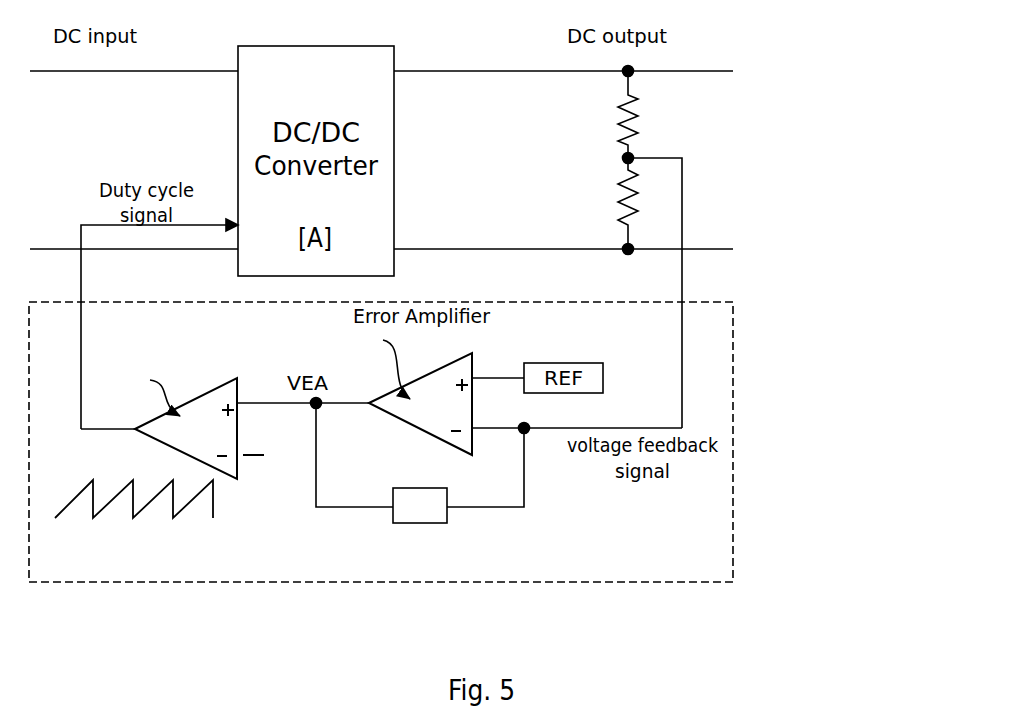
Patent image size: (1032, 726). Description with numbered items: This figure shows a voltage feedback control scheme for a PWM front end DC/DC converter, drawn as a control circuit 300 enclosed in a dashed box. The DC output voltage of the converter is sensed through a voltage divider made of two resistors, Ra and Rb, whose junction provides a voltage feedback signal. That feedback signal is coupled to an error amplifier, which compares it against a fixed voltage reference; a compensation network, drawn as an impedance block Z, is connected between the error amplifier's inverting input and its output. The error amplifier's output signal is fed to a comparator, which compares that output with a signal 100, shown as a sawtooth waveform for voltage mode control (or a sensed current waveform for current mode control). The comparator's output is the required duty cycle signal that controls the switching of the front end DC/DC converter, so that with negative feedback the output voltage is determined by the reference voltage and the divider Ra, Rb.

The signal 100 is at (263, 468).
The control circuit 300 is at (712, 338).
The resistor Ra is at (600, 114).
The resistor Rb is at (600, 203).
The compensation network impedance Z is at (432, 523).